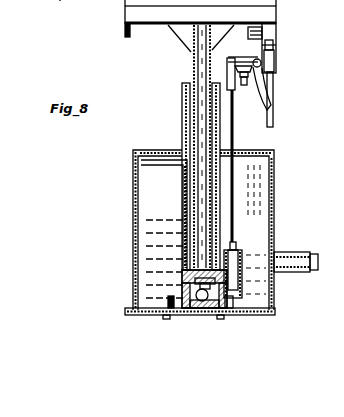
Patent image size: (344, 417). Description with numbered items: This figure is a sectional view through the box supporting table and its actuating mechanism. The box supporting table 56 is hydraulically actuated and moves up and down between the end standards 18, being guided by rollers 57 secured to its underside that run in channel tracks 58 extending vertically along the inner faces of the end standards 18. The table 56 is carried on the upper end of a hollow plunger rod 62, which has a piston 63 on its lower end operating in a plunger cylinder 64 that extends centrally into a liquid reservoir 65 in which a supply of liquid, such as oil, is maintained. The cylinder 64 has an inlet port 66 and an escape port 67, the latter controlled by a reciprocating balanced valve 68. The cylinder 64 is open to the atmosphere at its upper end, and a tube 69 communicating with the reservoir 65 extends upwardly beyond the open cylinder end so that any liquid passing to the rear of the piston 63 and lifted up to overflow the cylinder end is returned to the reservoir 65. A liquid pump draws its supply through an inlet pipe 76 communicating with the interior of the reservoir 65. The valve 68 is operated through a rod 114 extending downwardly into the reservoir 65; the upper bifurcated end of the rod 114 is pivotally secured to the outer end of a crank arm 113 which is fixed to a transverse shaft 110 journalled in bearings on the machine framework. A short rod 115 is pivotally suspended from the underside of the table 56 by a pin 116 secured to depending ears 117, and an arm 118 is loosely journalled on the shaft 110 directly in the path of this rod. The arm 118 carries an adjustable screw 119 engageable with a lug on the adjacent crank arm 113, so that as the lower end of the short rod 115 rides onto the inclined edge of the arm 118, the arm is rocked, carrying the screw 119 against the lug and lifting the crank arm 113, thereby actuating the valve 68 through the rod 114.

The end standards 18 is at (47, 0).
The box supporting table 56 is at (125, 31).
The rollers 57 is at (66, 8).
The channel tracks 58 is at (183, 11).
The hollow plunger rod 62 is at (198, 64).
The piston 63 is at (188, 272).
The plunger cylinder 64 is at (185, 203).
The liquid reservoir 65 is at (135, 178).
The inlet port 66 is at (194, 308).
The escape port 67 is at (227, 300).
The reciprocating balanced valve 68 is at (242, 258).
The tube 69 is at (182, 125).
The inlet pipe 76 is at (296, 272).
The shaft 110 is at (275, 53).
The crank arm 113 is at (240, 56).
The rod 114 is at (236, 142).
The short rod 115 is at (274, 112).
The pin 116 is at (273, 29).
The depending ears 117 is at (257, 37).
The arm 118 is at (268, 82).
The adjustable screw 119 is at (244, 85).